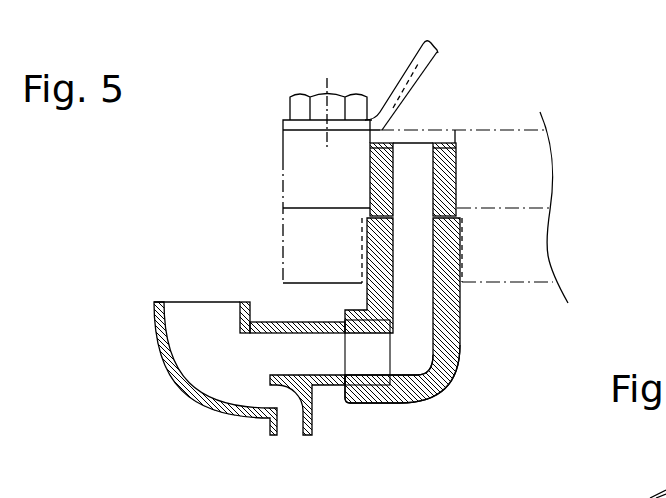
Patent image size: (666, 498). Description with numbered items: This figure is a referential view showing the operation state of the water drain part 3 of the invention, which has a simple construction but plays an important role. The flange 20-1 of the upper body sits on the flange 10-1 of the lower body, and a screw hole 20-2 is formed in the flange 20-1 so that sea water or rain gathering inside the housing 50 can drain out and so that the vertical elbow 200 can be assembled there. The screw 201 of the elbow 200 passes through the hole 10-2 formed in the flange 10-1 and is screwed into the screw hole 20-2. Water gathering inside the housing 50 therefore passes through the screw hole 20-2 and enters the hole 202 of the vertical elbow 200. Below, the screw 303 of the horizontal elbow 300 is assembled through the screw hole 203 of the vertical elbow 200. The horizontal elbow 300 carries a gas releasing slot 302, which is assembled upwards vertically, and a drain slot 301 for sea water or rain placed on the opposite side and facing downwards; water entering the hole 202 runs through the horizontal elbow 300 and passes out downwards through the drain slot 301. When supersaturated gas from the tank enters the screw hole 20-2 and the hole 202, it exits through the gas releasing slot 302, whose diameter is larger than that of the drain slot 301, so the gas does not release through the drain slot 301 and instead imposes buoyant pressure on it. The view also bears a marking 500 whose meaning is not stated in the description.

The drain part 3 is at (110, 446).
The housing 50 is at (413, 65).
The flange of the upper body 20-1 is at (297, 164).
The flange of the lower body 10-1 is at (297, 235).
The screw hole 20-2 is at (502, 152).
The screw 201 is at (460, 180).
The hole 10-2 is at (457, 272).
The hole of the vertical elbow 202 is at (445, 262).
The vertical elbow 200 is at (502, 313).
The screw hole of the vertical elbow 203 is at (370, 408).
The horizontal elbow 300 is at (262, 375).
The drain slot 301 is at (290, 427).
The gas releasing slot 302 is at (195, 314).
The screw of the horizontal elbow 303 is at (371, 398).
The section line 500 is at (258, 297).